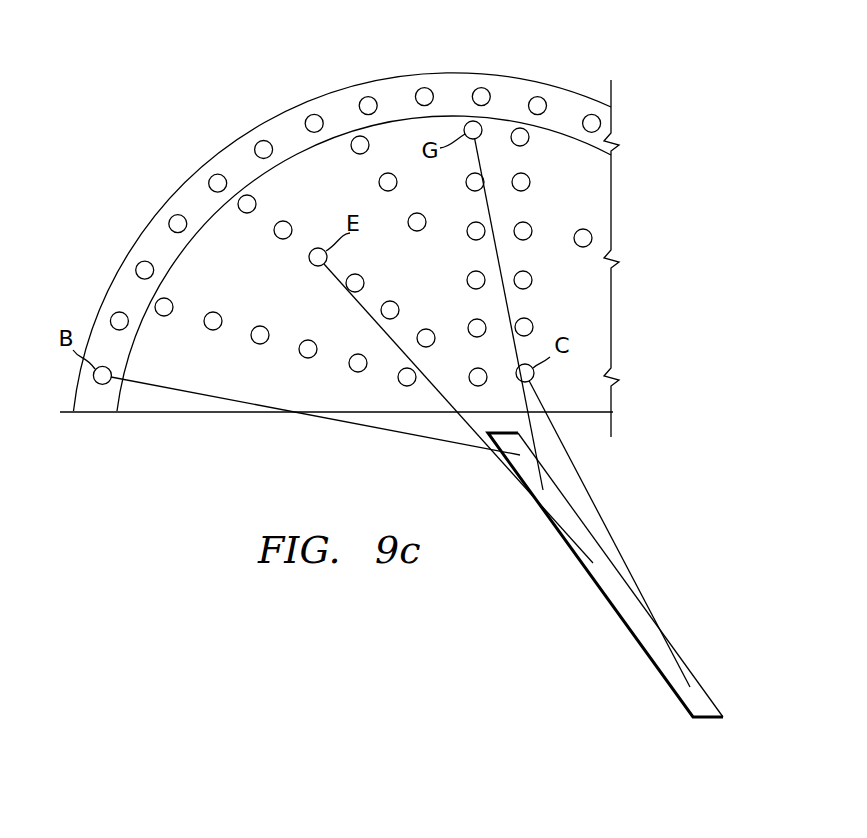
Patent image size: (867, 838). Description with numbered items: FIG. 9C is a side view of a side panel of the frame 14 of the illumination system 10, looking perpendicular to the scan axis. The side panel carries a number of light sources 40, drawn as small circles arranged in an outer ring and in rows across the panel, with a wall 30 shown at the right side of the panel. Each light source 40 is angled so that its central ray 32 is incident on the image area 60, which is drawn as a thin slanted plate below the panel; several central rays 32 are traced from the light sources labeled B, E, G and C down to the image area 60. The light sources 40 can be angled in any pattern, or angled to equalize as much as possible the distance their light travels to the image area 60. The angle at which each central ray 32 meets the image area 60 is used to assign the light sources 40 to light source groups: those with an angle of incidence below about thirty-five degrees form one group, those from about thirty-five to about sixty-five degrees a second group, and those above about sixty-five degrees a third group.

The illumination system 10 is at (147, 109).
The frame 14 is at (531, 62).
The wall / reflective surface 30 is at (581, 283).
The central ray 32 is at (364, 306).
The light source 40 is at (354, 152).
The image area 60 is at (625, 624).